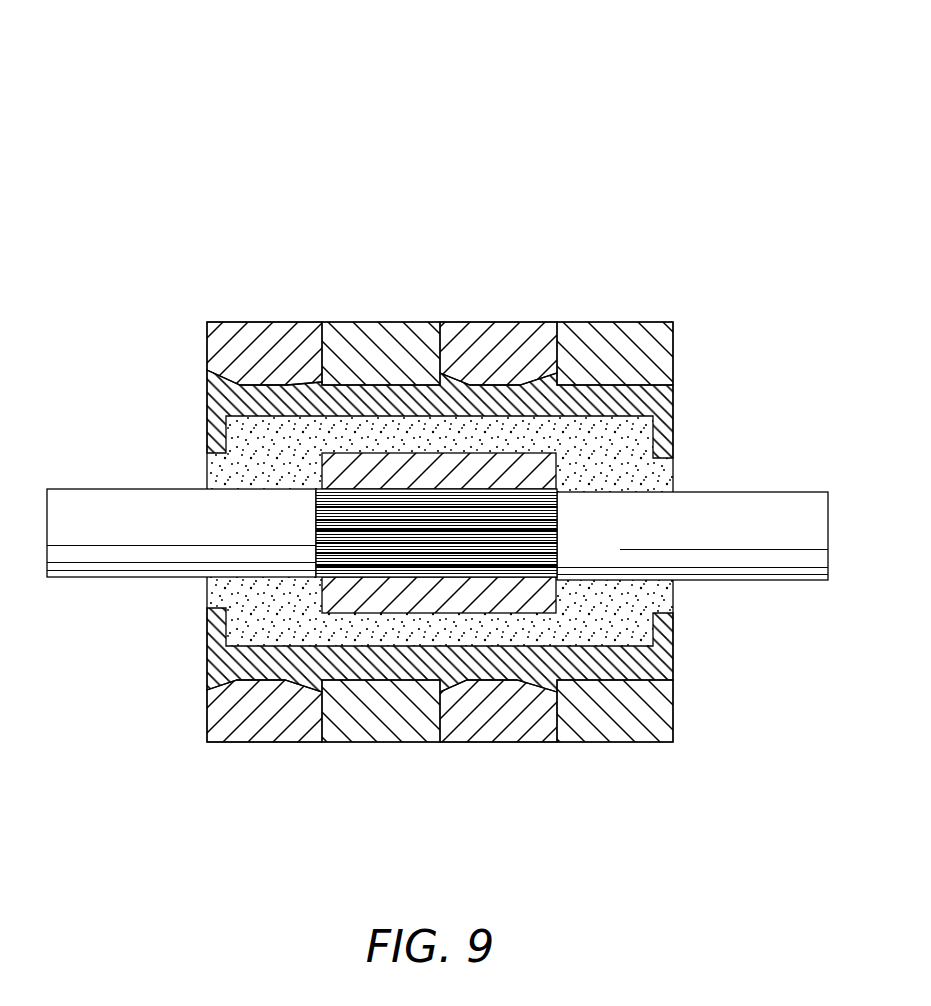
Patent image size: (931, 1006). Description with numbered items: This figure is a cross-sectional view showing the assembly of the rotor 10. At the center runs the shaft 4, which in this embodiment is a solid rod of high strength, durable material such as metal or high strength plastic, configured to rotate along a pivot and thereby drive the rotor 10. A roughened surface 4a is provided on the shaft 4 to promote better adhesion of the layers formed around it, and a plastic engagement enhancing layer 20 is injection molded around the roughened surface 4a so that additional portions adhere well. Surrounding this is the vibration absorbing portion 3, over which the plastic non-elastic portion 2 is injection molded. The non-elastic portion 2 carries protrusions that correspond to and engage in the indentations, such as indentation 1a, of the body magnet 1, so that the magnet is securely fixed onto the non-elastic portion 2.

The rotor 10 is at (239, 145).
The body magnet 1 is at (583, 335).
The indentation 1a is at (210, 377).
The non-elastic portion 2 is at (643, 677).
The vibration absorbing portion 3 is at (268, 637).
The shaft 4 is at (65, 493).
The roughened surface 4a is at (316, 515).
The plastic engagement enhancing layer 20 is at (485, 603).